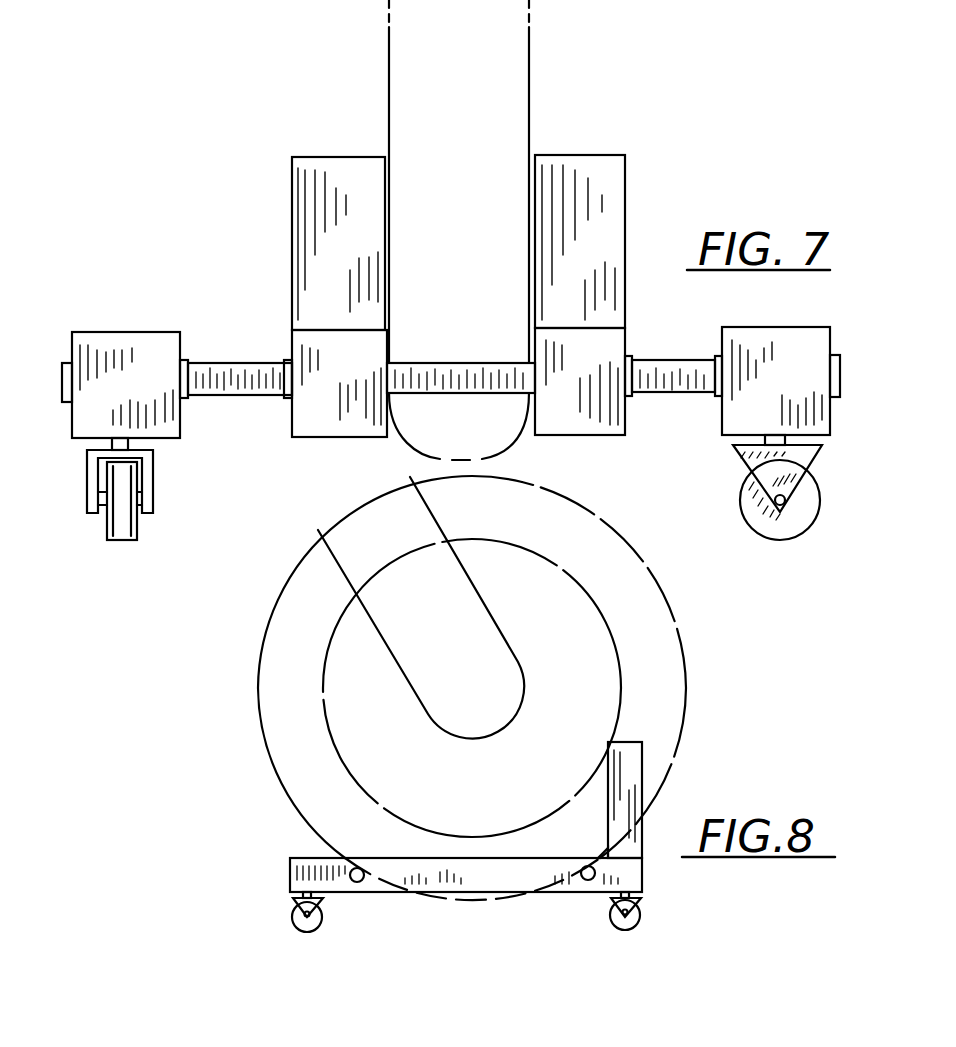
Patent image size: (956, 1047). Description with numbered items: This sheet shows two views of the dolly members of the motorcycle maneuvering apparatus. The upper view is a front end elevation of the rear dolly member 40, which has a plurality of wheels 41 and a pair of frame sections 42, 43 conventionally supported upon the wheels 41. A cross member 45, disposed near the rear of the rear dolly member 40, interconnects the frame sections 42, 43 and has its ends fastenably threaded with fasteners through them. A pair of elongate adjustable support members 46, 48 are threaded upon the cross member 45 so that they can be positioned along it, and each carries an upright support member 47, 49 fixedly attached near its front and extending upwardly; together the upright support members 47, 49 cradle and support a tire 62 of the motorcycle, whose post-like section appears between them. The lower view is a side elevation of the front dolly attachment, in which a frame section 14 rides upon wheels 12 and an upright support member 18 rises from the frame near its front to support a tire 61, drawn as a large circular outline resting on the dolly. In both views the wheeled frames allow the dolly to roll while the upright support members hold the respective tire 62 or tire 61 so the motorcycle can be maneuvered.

In FIG. 7, the rear dolly member 40 is at (192, 150).
In FIG. 7, the wheels 41 is at (120, 530).
In FIG. 7, the frame section 42 is at (173, 303).
In FIG. 7, the frame section 43 is at (813, 340).
In FIG. 7, the cross member 45 is at (243, 362).
In FIG. 7, the adjustable support member 46 is at (300, 423).
In FIG. 7, the upright support member 47 is at (300, 166).
In FIG. 7, the adjustable support member 48 is at (612, 428).
In FIG. 7, the upright support member 49 is at (612, 172).
In FIG. 7, the tire 62 is at (518, 145).
In FIG. 8, the wheels 12 is at (308, 930).
In FIG. 8, the frame section 14 is at (393, 883).
In FIG. 8, the upright support member 18 is at (627, 810).
In FIG. 8, the tire 61 is at (297, 787).